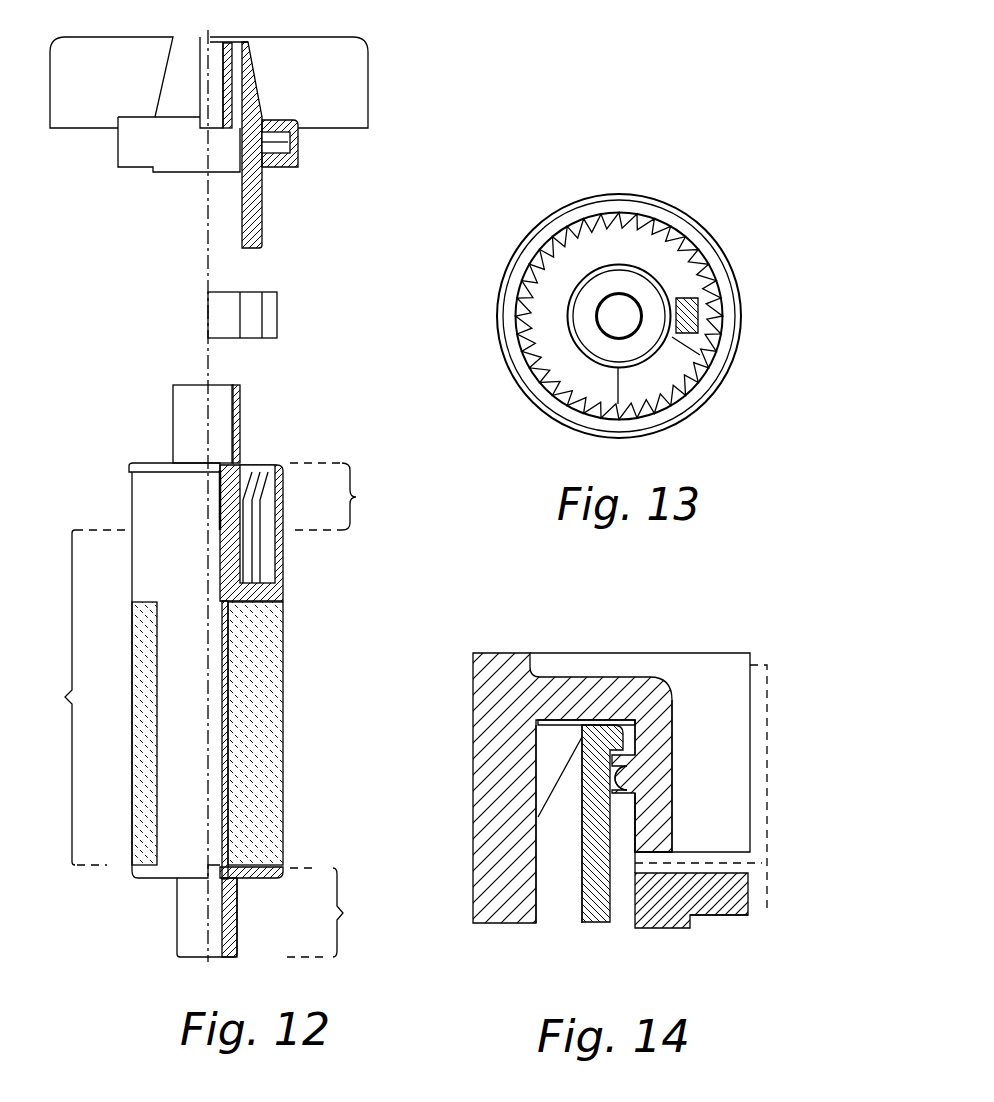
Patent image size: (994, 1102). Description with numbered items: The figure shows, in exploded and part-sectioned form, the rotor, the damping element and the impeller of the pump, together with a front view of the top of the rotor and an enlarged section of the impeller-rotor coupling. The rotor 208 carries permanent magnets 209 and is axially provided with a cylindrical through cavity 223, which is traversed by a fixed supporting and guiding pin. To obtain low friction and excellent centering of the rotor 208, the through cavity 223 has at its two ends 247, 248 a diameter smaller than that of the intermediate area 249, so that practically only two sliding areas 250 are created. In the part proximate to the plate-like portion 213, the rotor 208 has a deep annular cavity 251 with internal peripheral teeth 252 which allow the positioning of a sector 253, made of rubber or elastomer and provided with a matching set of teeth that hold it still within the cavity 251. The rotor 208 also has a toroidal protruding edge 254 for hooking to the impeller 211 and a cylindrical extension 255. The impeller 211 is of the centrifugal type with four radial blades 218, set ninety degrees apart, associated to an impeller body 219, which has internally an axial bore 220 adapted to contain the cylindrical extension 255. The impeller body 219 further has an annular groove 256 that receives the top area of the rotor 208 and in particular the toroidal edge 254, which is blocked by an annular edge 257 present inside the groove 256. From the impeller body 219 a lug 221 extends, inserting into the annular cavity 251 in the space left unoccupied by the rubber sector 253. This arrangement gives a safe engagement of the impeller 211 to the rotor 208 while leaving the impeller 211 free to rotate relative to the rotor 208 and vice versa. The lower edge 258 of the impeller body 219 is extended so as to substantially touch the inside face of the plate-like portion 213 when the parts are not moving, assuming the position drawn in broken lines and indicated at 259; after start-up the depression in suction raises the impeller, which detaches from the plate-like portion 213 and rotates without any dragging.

In FIG. 12, the rotor 208 is at (303, 651).
In FIG. 12, the permanent magnets 209 is at (137, 677).
In FIG. 12, the impeller 211 is at (381, 107).
In FIG. 14, the impeller 211 is at (749, 642).
In FIG. 14, the plate-like portion 213 is at (708, 912).
In FIG. 12, the radial blades 218 is at (78, 38).
In FIG. 14, the radial blades 218 is at (690, 672).
In FIG. 12, the impeller body 219 is at (130, 147).
In FIG. 14, the impeller body 219 is at (653, 743).
In FIG. 12, the axial bore 220 is at (227, 162).
In FIG. 12, the lug 221 is at (252, 249).
In FIG. 13, the lug 221 is at (698, 300).
In FIG. 12, the cylindrical through cavity 223 is at (215, 828).
In FIG. 12, the end of cylindrical through cavity 247 is at (355, 496).
In FIG. 12, the end of cylindrical through cavity 248 is at (346, 912).
In FIG. 12, the intermediate area 249 is at (75, 697).
In FIG. 12, the sliding areas 250 is at (220, 495).
In FIG. 12, the deep annular cavity 251 is at (251, 454).
In FIG. 13, the deep annular cavity 251 is at (623, 243).
In FIG. 13, the peripheral teeth 252 is at (673, 237).
In FIG. 12, the sector 253 is at (270, 323).
In FIG. 13, the sector 253 is at (657, 377).
In FIG. 12, the toroidal protruding edge 254 is at (130, 470).
In FIG. 14, the toroidal protruding edge 254 is at (618, 740).
In FIG. 12, the cylindrical extension 255 is at (182, 408).
In FIG. 14, the cylindrical extension 255 is at (593, 917).
In FIG. 12, the annular groove 256 is at (287, 177).
In FIG. 14, the annular edge 257 is at (630, 778).
In FIG. 14, the lower edge 258 is at (657, 852).
In FIG. 14, the rest position 259 is at (713, 903).